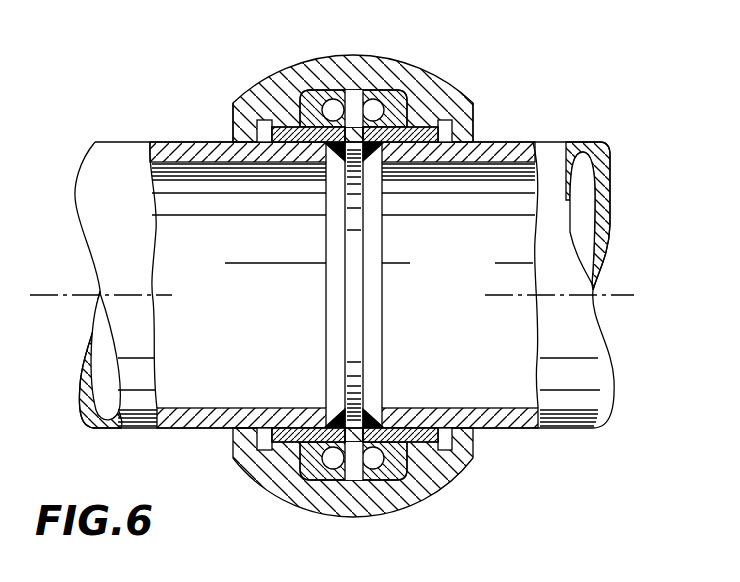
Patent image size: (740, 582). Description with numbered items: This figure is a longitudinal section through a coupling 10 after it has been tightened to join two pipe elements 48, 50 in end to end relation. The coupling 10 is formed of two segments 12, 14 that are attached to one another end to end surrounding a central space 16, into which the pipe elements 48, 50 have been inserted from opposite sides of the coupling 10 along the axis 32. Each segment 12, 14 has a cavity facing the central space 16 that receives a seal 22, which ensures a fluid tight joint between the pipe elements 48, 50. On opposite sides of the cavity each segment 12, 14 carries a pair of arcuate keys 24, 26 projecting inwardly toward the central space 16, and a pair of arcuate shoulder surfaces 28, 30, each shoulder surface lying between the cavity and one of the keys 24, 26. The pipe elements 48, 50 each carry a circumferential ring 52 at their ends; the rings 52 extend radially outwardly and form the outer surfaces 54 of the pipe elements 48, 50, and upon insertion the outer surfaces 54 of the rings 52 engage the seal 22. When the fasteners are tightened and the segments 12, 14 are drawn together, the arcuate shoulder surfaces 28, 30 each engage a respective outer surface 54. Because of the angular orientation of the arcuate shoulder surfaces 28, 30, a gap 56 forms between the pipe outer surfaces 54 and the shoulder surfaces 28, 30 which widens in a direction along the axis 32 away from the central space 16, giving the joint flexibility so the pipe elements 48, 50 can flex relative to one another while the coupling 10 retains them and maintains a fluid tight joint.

The coupling 10 is at (532, 77).
The segment 12 is at (374, 58).
The segment 14 is at (280, 493).
The central space 16 is at (344, 316).
The seal 22 is at (407, 478).
The arcuate key 24 is at (238, 122).
The arcuate key 26 is at (462, 127).
The arcuate shoulder surface 28 is at (267, 128).
The arcuate shoulder surface 30 is at (442, 112).
The axis 32 is at (606, 292).
The pipe element 48 is at (187, 430).
The pipe element 50 is at (531, 428).
The circumferential ring 52 is at (432, 467).
The outer surface 54 is at (409, 148).
The gap 56 is at (420, 118).